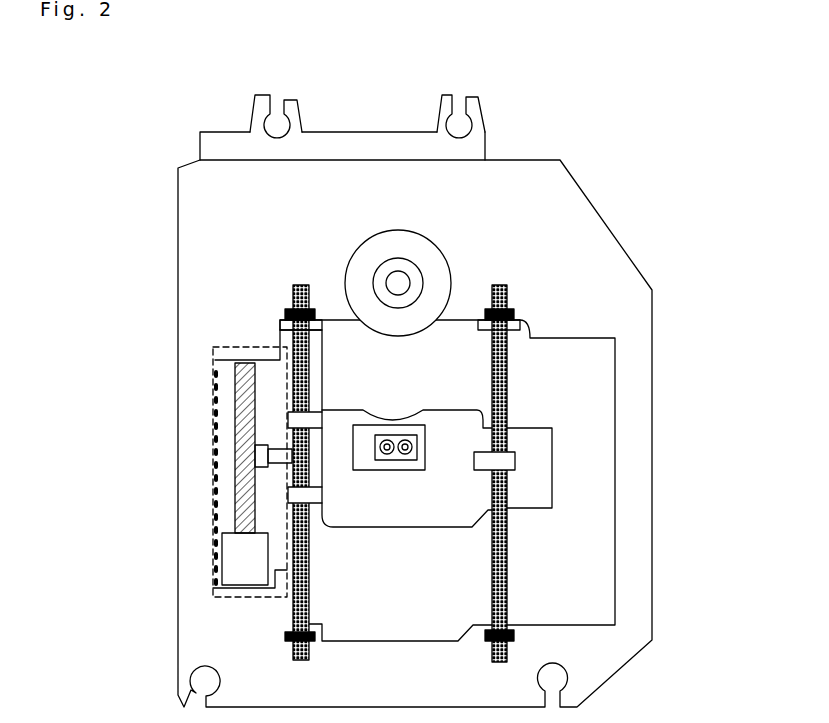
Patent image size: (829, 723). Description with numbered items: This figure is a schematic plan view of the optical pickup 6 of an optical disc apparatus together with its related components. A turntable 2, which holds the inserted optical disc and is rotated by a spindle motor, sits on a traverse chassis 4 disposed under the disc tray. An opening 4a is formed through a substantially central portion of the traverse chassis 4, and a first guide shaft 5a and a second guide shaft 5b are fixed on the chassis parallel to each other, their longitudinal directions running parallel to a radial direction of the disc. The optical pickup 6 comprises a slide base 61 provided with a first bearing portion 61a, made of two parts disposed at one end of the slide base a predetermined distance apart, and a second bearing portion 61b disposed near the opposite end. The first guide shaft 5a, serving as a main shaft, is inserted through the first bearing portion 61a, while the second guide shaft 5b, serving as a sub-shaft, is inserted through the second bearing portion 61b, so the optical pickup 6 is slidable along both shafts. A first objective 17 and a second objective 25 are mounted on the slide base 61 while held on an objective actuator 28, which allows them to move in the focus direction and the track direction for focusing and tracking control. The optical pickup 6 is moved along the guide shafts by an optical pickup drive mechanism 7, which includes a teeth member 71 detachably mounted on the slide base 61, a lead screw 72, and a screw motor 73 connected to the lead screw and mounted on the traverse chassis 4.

The turntable 2 is at (412, 233).
The traverse chassis 4 is at (613, 236).
The opening 4a is at (598, 403).
The first guide shaft 5a is at (301, 285).
The second guide shaft 5b is at (499, 285).
The optical pickup 6 is at (443, 459).
The slide base 61 is at (527, 500).
The first bearing portion 61a is at (320, 493).
The second bearing portion 61b is at (512, 460).
The first objective 17 is at (380, 455).
The second objective 25 is at (410, 457).
The objective actuator 28 is at (393, 470).
The optical pickup drive mechanism 7 is at (210, 442).
The teeth member 71 is at (258, 455).
The lead screw 72 is at (240, 400).
The screw motor 73 is at (225, 562).